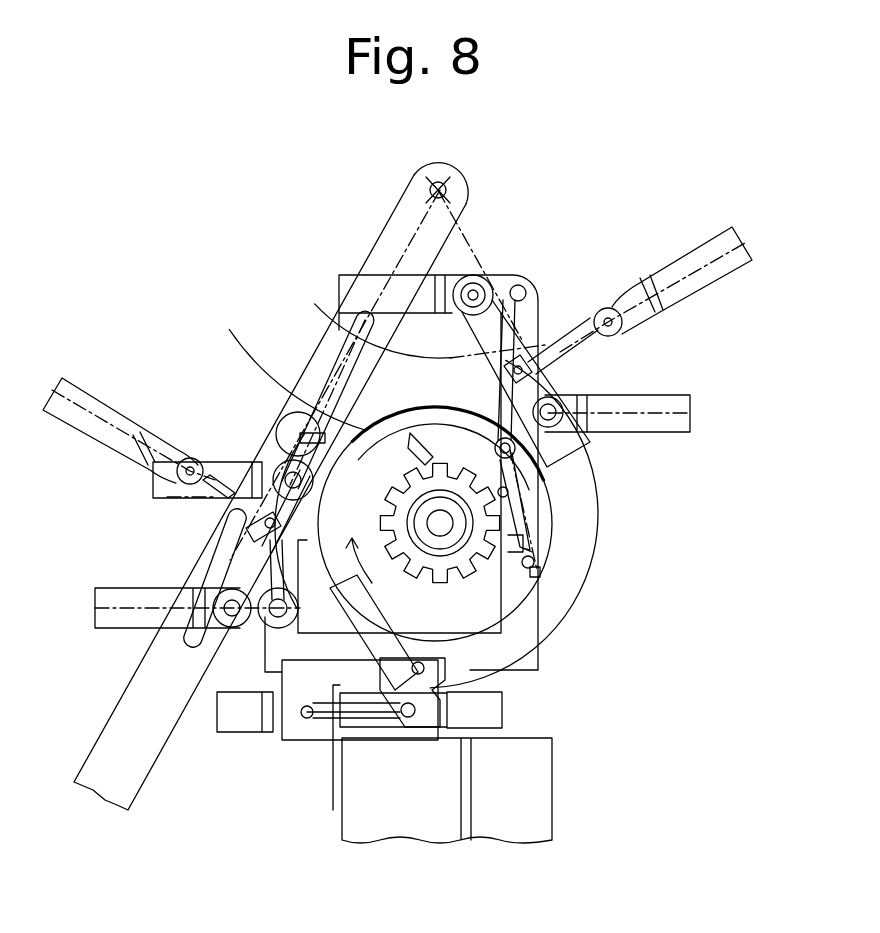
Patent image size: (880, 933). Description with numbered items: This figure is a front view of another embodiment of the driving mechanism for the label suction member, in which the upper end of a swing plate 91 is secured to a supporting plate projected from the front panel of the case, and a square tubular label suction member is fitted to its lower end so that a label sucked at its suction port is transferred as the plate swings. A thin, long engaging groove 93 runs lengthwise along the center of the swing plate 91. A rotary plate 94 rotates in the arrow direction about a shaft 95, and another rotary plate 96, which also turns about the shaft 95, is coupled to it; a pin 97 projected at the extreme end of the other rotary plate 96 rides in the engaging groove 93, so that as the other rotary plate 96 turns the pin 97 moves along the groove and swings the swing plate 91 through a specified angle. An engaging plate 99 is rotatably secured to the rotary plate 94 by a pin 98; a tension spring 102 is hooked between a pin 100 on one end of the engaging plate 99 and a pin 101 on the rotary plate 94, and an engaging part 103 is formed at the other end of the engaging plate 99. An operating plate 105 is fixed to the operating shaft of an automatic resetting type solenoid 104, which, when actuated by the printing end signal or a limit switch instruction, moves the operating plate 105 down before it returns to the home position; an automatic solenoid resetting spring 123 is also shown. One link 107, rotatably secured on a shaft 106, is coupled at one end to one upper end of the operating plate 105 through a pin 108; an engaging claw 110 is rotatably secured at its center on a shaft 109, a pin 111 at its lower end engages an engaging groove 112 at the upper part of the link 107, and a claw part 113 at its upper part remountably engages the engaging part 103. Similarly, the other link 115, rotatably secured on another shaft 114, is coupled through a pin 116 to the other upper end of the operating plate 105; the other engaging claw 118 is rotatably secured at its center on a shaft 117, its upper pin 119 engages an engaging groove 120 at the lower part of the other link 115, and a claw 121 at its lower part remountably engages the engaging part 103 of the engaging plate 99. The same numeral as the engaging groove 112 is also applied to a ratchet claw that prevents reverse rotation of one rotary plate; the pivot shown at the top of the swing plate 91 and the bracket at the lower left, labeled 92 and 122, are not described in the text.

The swing plate 91 is at (388, 245).
The pivot pin 92 is at (447, 190).
The engaging groove 93 is at (363, 443).
The rotary plate 94 is at (480, 653).
The shaft 95 is at (440, 526).
The other rotary plate 96 is at (262, 434).
The pin 97 is at (278, 432).
The pin 98 is at (325, 375).
The engaging plate 99 is at (423, 423).
The pin 100 is at (540, 500).
The pin 101 is at (535, 567).
The tension spring 102 is at (510, 495).
The engaging part 103 is at (265, 442).
The automatic resetting type solenoid 104 is at (383, 823).
The operating plate 105 is at (530, 308).
The shaft 106 is at (197, 607).
The link 107 is at (252, 637).
The pin 108 is at (252, 573).
The shaft 109 is at (140, 446).
The engaging claw 110 is at (255, 517).
The pin 111 is at (253, 538).
The engaging groove 112 is at (283, 563).
The claw part 113 is at (369, 599).
The other shaft 114 is at (477, 290).
The other link 115 is at (520, 290).
The pin 116 is at (532, 290).
The shaft 117 is at (556, 410).
The other engaging claw 118 is at (590, 445).
The pin 119 is at (540, 365).
The engaging groove 120 is at (452, 358).
The claw 121 is at (560, 463).
The bracket 122 is at (333, 685).
The automatic solenoid resetting spring 123 is at (663, 328).